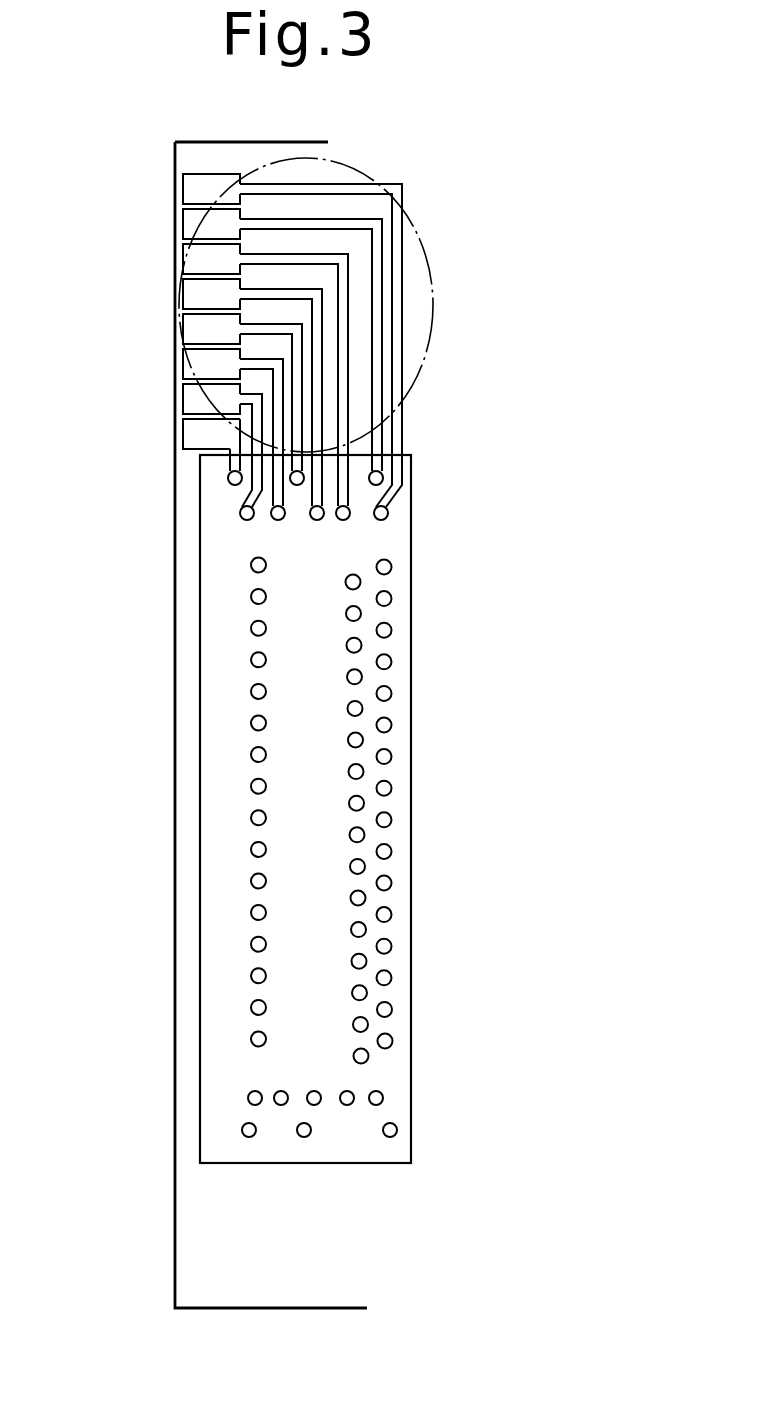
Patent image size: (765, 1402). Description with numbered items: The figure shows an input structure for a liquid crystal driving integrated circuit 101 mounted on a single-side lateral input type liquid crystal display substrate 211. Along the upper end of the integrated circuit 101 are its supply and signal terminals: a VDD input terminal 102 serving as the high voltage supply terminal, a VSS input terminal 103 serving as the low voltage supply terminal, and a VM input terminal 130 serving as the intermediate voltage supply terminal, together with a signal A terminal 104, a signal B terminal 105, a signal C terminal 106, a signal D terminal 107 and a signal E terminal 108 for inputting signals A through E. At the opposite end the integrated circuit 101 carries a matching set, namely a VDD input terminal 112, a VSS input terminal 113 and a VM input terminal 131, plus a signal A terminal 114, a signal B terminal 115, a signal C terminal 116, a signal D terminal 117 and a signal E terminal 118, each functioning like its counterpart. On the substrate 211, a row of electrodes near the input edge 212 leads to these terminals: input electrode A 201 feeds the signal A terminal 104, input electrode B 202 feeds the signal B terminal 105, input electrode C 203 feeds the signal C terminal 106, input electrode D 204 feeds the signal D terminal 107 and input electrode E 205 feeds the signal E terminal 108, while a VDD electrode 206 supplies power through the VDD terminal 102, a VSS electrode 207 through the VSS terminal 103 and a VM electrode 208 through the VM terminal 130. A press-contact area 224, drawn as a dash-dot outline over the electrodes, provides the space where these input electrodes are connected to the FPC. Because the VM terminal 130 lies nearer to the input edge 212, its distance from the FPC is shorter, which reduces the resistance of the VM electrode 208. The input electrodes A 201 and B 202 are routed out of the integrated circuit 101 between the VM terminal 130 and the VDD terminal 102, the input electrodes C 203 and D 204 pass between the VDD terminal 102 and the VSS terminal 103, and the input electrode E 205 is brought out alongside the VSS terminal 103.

The liquid crystal driving integrated circuit 101 is at (412, 648).
The VDD input terminal 102 is at (297, 486).
The VSS input terminal 103 is at (382, 472).
The signal A terminal 104 is at (240, 513).
The signal B terminal 105 is at (270, 520).
The signal C terminal 106 is at (320, 520).
The signal D terminal 107 is at (350, 518).
The signal E terminal 108 is at (387, 509).
The VDD input terminal 112 is at (305, 1138).
The VSS input terminal 113 is at (389, 1138).
The signal A terminal 114 is at (248, 1097).
The signal B terminal 115 is at (275, 1093).
The signal C terminal 116 is at (316, 1091).
The signal D terminal 117 is at (353, 1093).
The signal E terminal 118 is at (383, 1100).
The VM input terminal 130 is at (228, 478).
The VM input terminal 131 is at (242, 1130).
The input electrode A 201 is at (183, 399).
The input electrode B 202 is at (183, 365).
The input electrode C 203 is at (183, 295).
The input electrode D 204 is at (183, 260).
The input electrode E 205 is at (183, 190).
The VDD electrode 206 is at (183, 330).
The VSS electrode 207 is at (183, 226).
The VM electrode 208 is at (183, 434).
The liquid crystal display substrate 211 is at (236, 150).
The input edge 212 is at (175, 656).
The press-contact area 224 is at (433, 304).